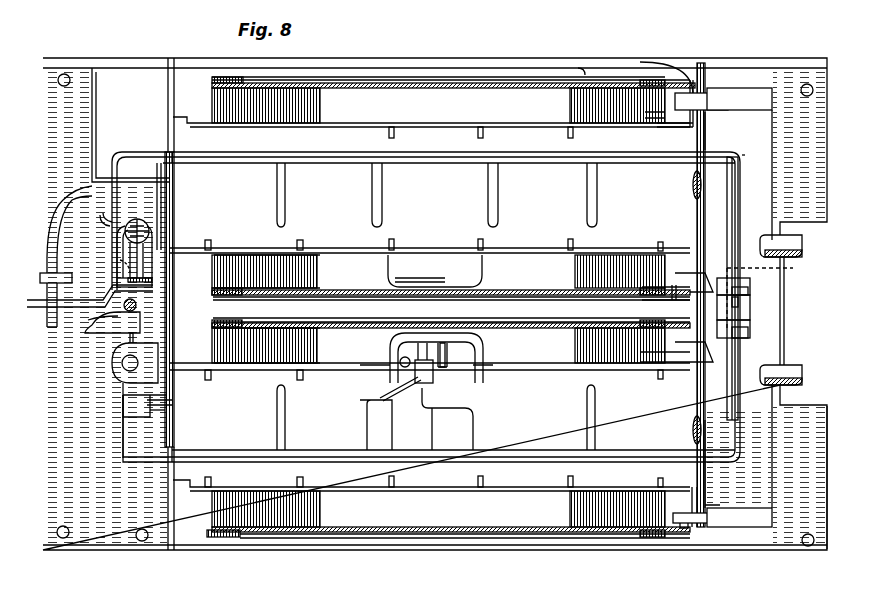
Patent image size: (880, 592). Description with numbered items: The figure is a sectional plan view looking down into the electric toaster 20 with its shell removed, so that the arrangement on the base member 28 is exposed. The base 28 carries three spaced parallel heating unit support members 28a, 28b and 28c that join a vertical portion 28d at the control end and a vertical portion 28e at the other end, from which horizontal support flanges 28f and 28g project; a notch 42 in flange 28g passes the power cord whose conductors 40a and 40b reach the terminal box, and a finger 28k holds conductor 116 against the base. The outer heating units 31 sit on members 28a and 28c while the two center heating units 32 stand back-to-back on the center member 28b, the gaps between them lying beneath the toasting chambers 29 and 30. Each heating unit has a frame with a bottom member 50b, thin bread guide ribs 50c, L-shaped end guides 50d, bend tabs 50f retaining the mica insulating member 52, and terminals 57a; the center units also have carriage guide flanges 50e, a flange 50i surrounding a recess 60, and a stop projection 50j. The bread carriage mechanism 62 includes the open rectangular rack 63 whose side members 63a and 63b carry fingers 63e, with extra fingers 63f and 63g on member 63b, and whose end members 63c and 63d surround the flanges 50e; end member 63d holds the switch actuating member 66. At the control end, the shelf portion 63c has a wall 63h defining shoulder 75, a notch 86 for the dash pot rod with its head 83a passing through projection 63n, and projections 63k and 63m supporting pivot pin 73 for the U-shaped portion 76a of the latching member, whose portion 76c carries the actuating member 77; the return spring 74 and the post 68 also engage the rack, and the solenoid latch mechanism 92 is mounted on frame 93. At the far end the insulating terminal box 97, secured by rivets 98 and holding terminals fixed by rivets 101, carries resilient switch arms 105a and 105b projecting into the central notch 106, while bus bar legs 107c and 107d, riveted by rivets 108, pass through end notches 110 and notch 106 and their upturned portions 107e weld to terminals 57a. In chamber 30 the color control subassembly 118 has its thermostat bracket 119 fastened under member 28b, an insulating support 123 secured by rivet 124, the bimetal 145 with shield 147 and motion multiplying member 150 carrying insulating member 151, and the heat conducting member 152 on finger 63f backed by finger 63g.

The electric toaster 20 is at (476, 26).
The base member 28 is at (595, 60).
The heating unit support member 28a is at (584, 68).
The center heating unit support member 28b is at (250, 290).
The heating unit support member 28c is at (595, 548).
The vertical portion 28d is at (166, 487).
The vertical portion 28e is at (708, 472).
The support flange 28f is at (125, 548).
The support flange 28g is at (797, 550).
The finger 28k is at (42, 273).
The toasting chamber 29 is at (460, 213).
The toasting chamber 30 is at (532, 416).
The outer heating unit 31 is at (365, 108).
The center heating unit 32 is at (503, 285).
The power cord conductor 40a is at (792, 235).
The power cord conductor 40b is at (800, 378).
The notch 42 is at (802, 240).
The bottom frame member 50b is at (425, 100).
The bread guide rib 50c is at (388, 240).
The end bread guide 50d is at (222, 231).
The carriage guide flange 50e is at (174, 200).
The bend tab 50f is at (318, 92).
The upwardly directed flange 50i is at (392, 282).
The stop member 50j is at (148, 410).
The insulating member 52 is at (487, 84).
The electric terminal 57a is at (665, 80).
The recess 60 is at (400, 262).
The bread carriage mechanism 62 is at (745, 152).
The bread supporting rack 63 is at (398, 158).
The side member 63a is at (498, 158).
The side member 63b is at (527, 454).
The end member 63c is at (122, 440).
The end member 63d is at (804, 183).
The finger 63e is at (370, 182).
The finger 63f is at (367, 430).
The finger 63g is at (473, 428).
The vertical wall portion 63h is at (165, 215).
The vertical projection 63k is at (150, 190).
The vertical projection 63m is at (118, 258).
The projection 63n is at (118, 375).
The switch actuating member 66 is at (775, 293).
The carriage support post 68 is at (122, 330).
The pivot pin 73 is at (115, 248).
The carriage return spring 74 is at (144, 220).
The shoulder 75 is at (145, 401).
The U-shaped portion 76a is at (112, 235).
The upwardly directed portion 76c is at (128, 280).
The actuating member 77 is at (37, 308).
The enlargement 83a is at (115, 362).
The notch 86 is at (120, 388).
The solenoid latch mechanism 92 is at (84, 70).
The support frame 93 is at (116, 70).
The terminal box 97 is at (772, 452).
The rivet 98 is at (692, 188).
The rivet 101 is at (736, 225).
The resilient switch arm 105a is at (750, 290).
The resilient switch arm 105b is at (750, 330).
The central notch 106 is at (752, 346).
The bus bar leg portion 107c is at (696, 93).
The bus bar leg portion 107d is at (692, 272).
The upwardly extending portion 107e is at (657, 120).
The rivet 108 is at (703, 135).
The end notch 110 is at (745, 98).
The conductor 116 is at (60, 195).
The thermostat and color control subassembly 118 is at (455, 370).
The thermostat bracket 119 is at (438, 342).
The insulating support 123 is at (378, 398).
The rivet 124 is at (398, 360).
The bimetallic element 145 is at (425, 405).
The shielding and support strip 147 is at (410, 335).
The switch operating and motion multiplying member 150 is at (470, 340).
The insulating member 151 is at (447, 345).
The heat conducting member 152 is at (388, 402).